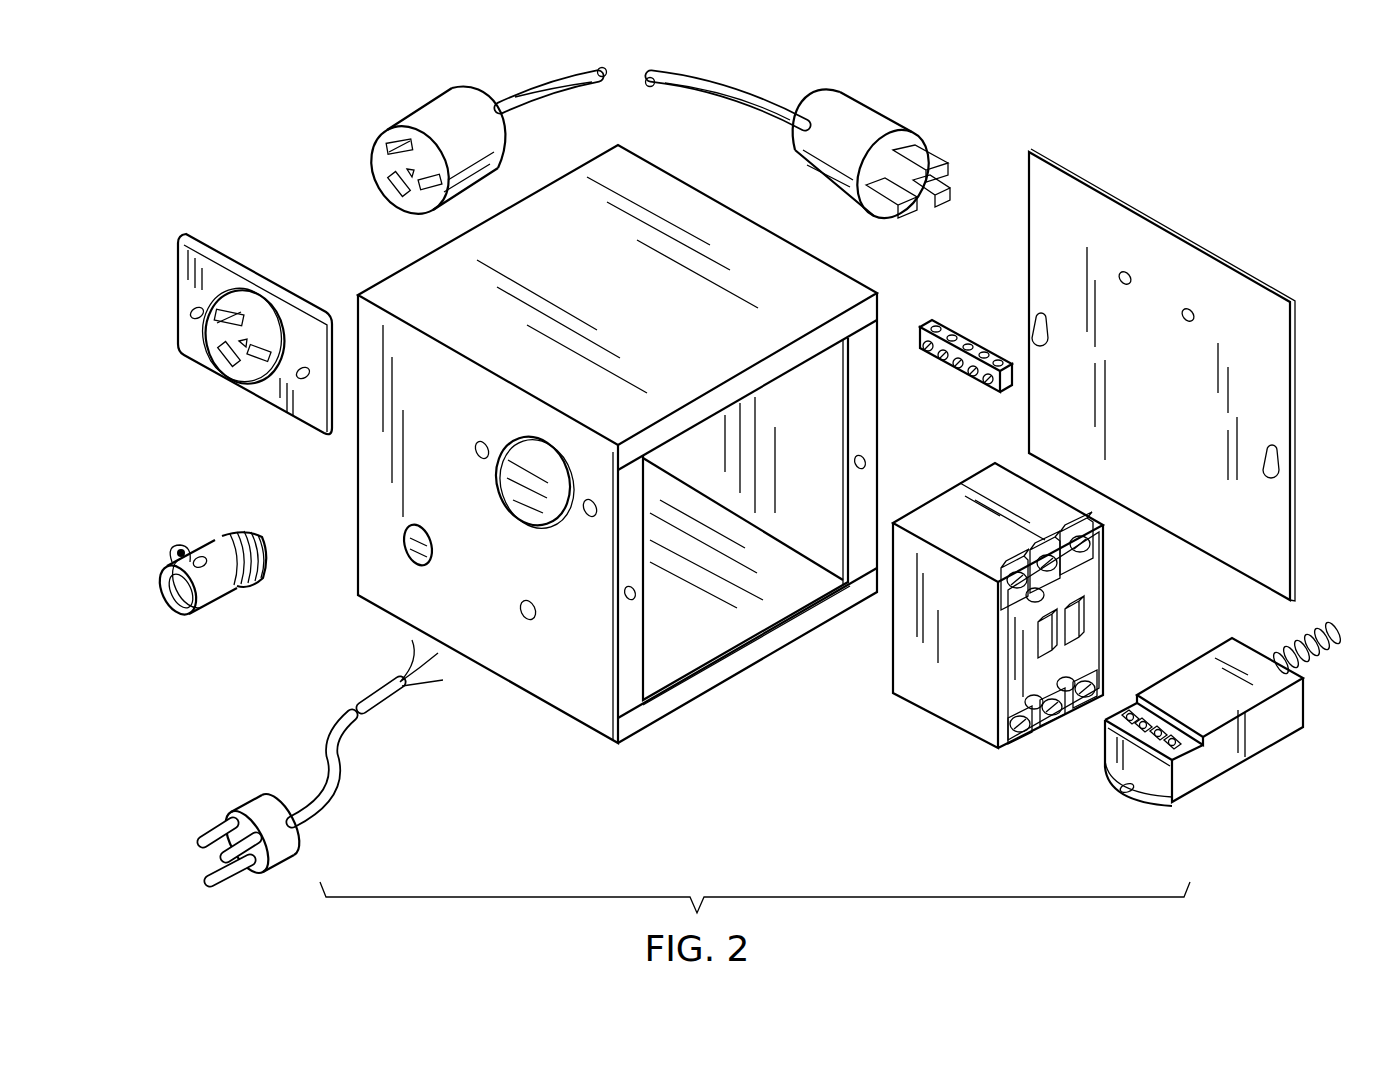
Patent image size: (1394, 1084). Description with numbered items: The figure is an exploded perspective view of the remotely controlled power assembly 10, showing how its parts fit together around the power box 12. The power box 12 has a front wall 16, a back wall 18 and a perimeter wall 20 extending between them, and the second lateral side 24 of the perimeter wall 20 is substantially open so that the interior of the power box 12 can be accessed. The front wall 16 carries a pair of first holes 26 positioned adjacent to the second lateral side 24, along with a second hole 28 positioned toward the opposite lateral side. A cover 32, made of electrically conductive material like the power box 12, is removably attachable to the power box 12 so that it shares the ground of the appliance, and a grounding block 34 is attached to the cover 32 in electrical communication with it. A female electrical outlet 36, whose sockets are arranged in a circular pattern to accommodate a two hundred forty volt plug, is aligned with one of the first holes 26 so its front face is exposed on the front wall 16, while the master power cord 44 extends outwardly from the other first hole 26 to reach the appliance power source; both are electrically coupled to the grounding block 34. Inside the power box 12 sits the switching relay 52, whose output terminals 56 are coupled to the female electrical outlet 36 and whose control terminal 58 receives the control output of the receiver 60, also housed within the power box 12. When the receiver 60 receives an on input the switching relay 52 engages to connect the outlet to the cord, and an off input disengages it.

The remotely controlled power assembly 10 is at (1243, 140).
The power box 12 is at (611, 455).
The front wall 16 is at (397, 453).
The back wall 18 is at (866, 398).
The perimeter wall 20 is at (660, 190).
The second lateral side 24 is at (763, 648).
The first holes 26 is at (367, 290).
The second hole 28 is at (412, 550).
The cover 32 is at (1157, 230).
The grounding block 34 is at (970, 343).
The female electrical outlet 36 is at (230, 258).
The master power cord 44 is at (323, 793).
The switching relay 52 is at (1039, 666).
The output terminals 56 is at (1027, 587).
The control terminal 58 is at (1080, 625).
The receiver 60 is at (1278, 737).